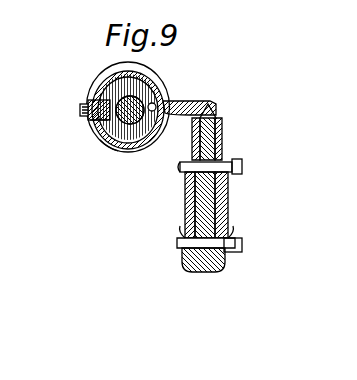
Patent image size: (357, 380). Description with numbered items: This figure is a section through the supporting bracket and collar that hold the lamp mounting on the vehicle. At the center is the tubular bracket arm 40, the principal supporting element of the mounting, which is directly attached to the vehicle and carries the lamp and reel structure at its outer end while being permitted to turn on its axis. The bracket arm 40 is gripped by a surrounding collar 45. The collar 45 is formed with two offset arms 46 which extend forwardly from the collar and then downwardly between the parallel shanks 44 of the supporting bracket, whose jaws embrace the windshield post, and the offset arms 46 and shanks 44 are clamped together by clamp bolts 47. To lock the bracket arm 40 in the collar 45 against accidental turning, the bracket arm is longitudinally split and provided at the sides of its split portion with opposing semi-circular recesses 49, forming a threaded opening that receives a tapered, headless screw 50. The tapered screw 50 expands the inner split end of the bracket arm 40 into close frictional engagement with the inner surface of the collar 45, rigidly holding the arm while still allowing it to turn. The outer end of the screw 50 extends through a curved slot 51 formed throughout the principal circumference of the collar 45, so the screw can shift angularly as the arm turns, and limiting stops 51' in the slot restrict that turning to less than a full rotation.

The tubular bracket arm 40 is at (103, 84).
The collar 45 is at (158, 84).
The offset arms 46 is at (211, 110).
The clamp bolts 47 is at (240, 167).
The parallel shanks 44 is at (185, 202).
The semi-circular recesses 49 is at (96, 121).
The tapered headless screw 50 is at (86, 104).
The curved slot 51 is at (104, 160).
The limiting stops 51' is at (174, 128).